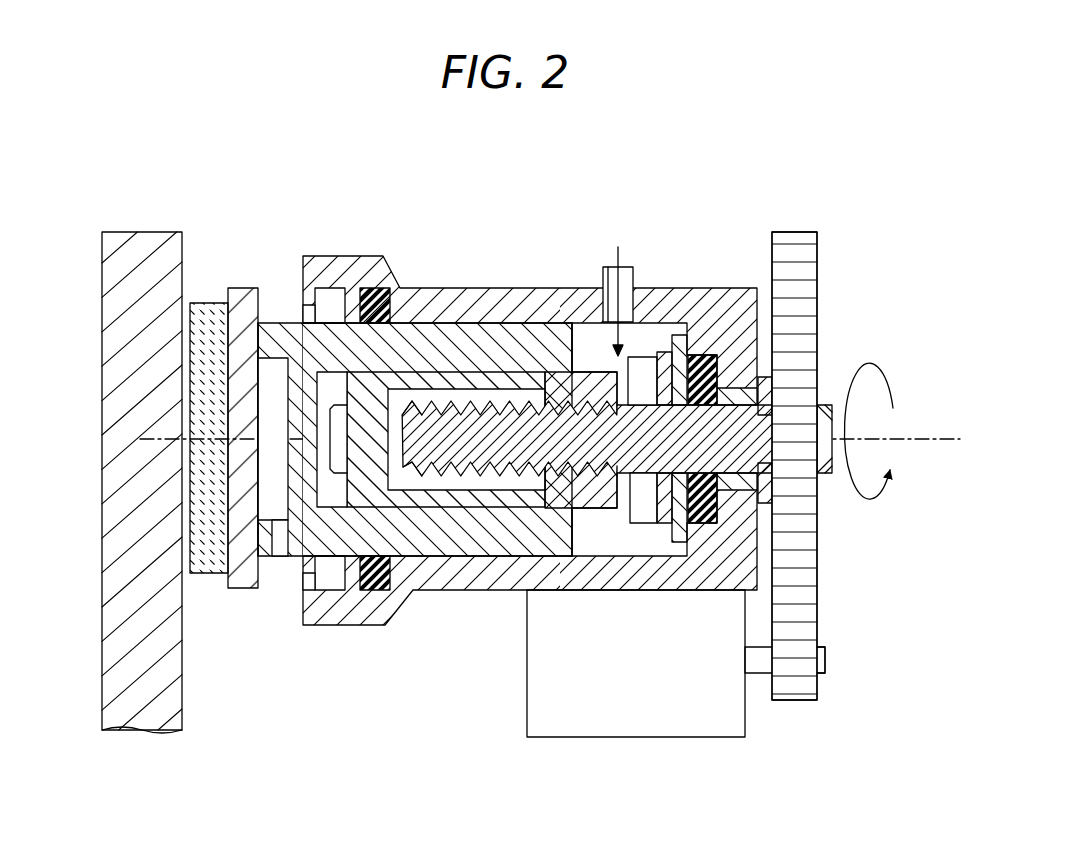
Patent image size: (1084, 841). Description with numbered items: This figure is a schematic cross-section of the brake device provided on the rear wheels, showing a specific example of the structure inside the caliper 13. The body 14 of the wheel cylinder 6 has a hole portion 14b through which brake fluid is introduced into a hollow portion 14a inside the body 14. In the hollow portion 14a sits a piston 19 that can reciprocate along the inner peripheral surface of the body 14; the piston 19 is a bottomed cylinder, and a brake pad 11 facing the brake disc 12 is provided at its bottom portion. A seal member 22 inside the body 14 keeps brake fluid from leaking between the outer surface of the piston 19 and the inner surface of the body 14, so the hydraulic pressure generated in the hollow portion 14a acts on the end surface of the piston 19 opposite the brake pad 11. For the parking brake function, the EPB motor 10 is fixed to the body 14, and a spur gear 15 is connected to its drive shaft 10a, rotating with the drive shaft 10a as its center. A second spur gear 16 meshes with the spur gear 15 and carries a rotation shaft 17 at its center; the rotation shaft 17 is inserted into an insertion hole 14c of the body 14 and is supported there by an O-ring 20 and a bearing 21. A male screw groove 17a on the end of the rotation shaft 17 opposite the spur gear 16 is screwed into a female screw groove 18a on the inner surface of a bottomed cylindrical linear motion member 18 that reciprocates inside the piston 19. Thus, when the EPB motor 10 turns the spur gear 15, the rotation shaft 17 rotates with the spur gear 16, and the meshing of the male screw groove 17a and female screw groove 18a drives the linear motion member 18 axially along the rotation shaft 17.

The wheel cylinder 6 is at (500, 267).
The EPB motor 10 is at (603, 737).
The drive shaft 10a is at (760, 665).
The brake pad 11 is at (210, 575).
The brake disc 12 is at (102, 558).
The caliper 13 is at (672, 175).
The body 14 is at (538, 288).
The hollow portion 14a is at (590, 335).
The hole portion 14b is at (623, 292).
The insertion hole 14c is at (768, 395).
The spur gear 15 is at (817, 685).
The spur gear 16 is at (812, 258).
The rotation shaft 17 is at (753, 428).
The male screw groove 17a is at (500, 470).
The linear motion member 18 is at (455, 490).
The female screw groove 18a is at (573, 476).
The piston 19 is at (415, 535).
The O-ring 20 is at (703, 517).
The bearing 21 is at (723, 490).
The seal member 22 is at (383, 592).